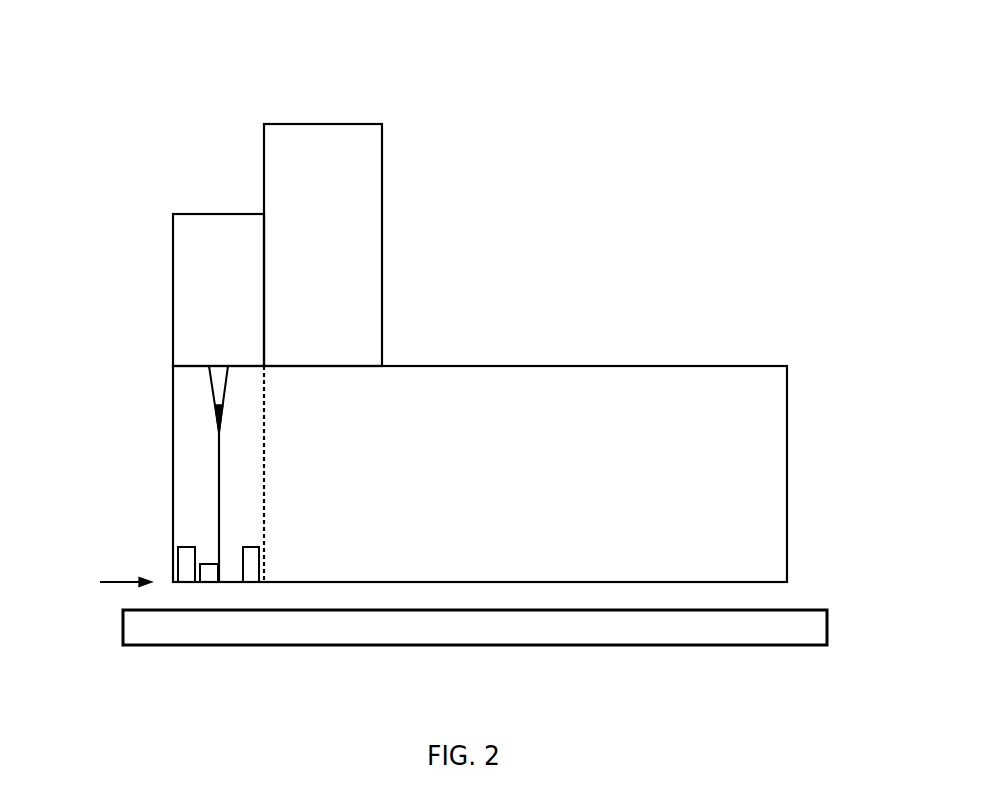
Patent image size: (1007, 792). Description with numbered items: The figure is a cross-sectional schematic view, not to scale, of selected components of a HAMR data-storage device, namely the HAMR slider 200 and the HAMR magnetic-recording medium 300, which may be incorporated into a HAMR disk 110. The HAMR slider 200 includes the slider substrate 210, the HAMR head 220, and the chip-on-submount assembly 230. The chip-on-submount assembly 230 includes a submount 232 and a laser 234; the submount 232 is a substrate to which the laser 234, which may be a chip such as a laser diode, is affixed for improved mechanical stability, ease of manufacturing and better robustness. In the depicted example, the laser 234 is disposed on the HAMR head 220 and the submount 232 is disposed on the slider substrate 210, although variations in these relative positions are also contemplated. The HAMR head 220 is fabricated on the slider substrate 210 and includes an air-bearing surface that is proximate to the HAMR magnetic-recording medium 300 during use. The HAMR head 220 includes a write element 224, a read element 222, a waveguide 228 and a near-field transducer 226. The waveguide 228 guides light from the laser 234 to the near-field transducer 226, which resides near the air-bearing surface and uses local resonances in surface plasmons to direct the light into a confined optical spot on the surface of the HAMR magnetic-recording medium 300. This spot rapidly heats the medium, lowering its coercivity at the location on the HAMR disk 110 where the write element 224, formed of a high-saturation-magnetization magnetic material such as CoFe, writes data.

The HAMR slider 200 is at (698, 115).
The chip-on-submount assembly 230 is at (206, 114).
The laser 234 is at (174, 252).
The submount 232 is at (382, 225).
The slider substrate 210 is at (787, 438).
The HAMR head 220 is at (275, 393).
The waveguide 228 is at (219, 467).
The near-field transducer 226 is at (210, 564).
The write element 224 is at (183, 547).
The read element 222 is at (253, 547).
The HAMR disk 110 is at (846, 604).
The HAMR magnetic-recording medium 300 is at (123, 628).